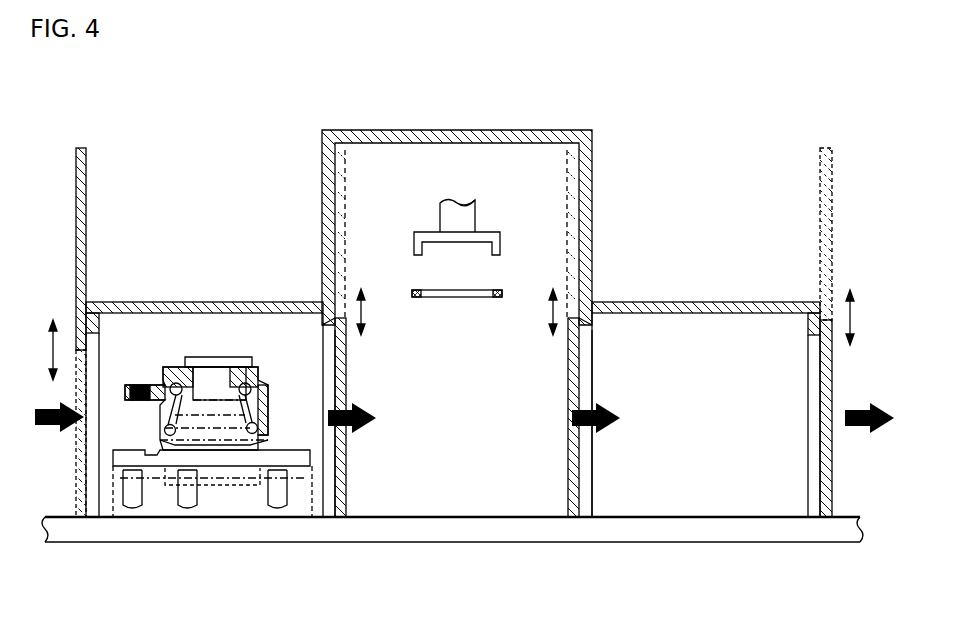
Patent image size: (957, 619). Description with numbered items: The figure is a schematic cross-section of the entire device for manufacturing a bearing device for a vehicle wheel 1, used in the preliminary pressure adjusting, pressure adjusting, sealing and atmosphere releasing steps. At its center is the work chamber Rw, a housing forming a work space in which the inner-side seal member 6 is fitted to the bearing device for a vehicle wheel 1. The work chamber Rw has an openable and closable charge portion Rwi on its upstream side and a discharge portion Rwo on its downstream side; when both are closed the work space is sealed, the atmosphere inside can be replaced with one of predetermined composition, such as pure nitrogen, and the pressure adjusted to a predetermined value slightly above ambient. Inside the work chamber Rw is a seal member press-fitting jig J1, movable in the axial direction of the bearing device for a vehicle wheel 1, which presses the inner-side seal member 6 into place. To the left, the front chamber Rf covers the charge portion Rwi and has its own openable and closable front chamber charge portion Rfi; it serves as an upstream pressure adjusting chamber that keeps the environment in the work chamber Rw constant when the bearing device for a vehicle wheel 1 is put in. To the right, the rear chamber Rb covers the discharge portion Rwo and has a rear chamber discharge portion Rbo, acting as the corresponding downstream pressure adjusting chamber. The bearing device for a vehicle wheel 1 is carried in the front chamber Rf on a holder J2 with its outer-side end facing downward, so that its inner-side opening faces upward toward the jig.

The bearing device for a vehicle wheel 1 is at (141, 360).
The inner-side seal member 6 is at (412, 294).
The seal member press-fitting jig J1 is at (414, 241).
The holder J2 is at (222, 512).
The front chamber charge portion Rfi is at (85, 226).
The front chamber Rf is at (212, 304).
The work chamber Rw is at (453, 132).
The charge portion Rwi is at (340, 349).
The discharge portion Rwo is at (576, 350).
The rear chamber Rb is at (697, 304).
The rear chamber discharge portion Rbo is at (828, 373).